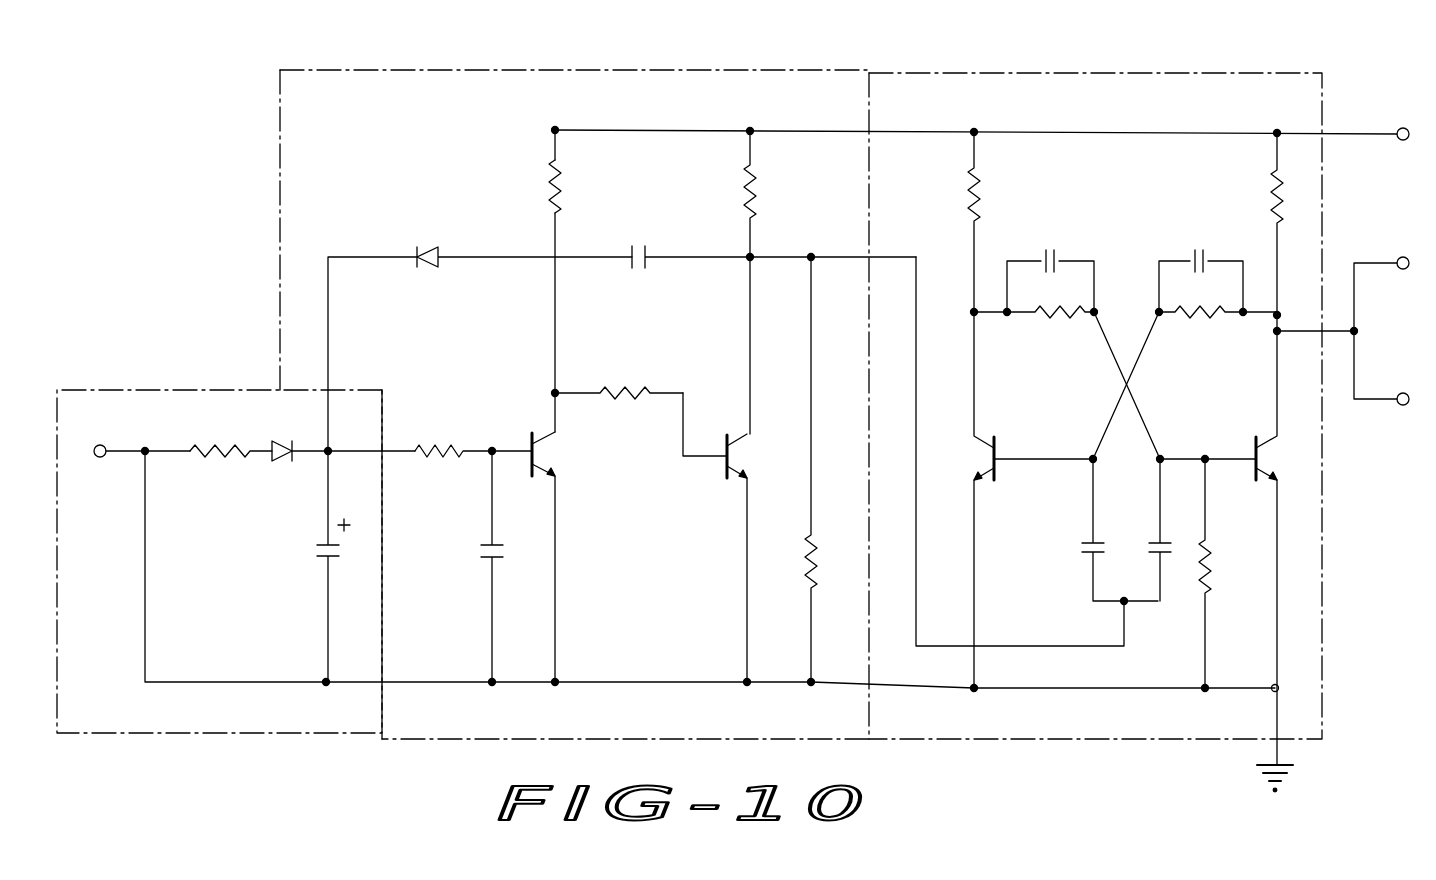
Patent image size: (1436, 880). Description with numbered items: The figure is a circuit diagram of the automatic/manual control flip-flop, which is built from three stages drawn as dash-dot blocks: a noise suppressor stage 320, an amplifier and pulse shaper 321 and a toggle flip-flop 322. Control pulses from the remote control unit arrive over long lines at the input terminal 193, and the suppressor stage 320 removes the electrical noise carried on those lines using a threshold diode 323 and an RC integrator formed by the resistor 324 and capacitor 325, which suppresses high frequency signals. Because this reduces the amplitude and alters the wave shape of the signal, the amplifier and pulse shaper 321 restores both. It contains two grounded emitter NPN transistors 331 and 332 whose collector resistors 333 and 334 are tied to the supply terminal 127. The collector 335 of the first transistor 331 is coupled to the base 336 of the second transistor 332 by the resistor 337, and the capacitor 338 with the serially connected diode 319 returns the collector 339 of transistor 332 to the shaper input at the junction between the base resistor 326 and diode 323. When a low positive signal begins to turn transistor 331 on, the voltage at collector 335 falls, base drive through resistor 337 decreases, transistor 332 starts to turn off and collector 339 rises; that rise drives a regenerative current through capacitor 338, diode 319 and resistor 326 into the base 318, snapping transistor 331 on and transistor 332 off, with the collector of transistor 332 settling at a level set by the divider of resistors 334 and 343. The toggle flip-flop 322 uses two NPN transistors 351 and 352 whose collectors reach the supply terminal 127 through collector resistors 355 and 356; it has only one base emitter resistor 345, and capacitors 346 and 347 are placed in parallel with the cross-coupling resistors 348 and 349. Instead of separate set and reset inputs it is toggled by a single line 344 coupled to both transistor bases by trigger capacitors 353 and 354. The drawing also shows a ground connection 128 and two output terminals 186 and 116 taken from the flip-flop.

The input terminal 193 is at (104, 444).
The resistor 324 is at (214, 444).
The threshold diode 323 is at (296, 444).
The capacitor 325 is at (314, 548).
The noise suppressor stage 320 is at (192, 390).
The amplifier and pulse shaper 321 is at (452, 70).
The toggle flip-flop 322 is at (1047, 73).
The base resistor 326 is at (446, 444).
The base 318 is at (510, 444).
The first transistor 331 is at (548, 452).
The collector 335 is at (542, 352).
The collector resistor 333 is at (542, 177).
The collector resistor 334 is at (738, 182).
The resistor 337 is at (638, 390).
The base 336 is at (684, 390).
The second transistor 332 is at (740, 453).
The collector 339 is at (750, 358).
The diode 319 is at (420, 250).
The capacitor 338 is at (626, 253).
The resistor 343 is at (801, 554).
The toggle line 344 is at (1013, 646).
The collector resistor 355 is at (966, 184).
The collector resistor 356 is at (1272, 184).
The NPN transistor 351 is at (976, 455).
The NPN transistor 352 is at (1263, 453).
The capacitor 346 is at (1056, 260).
The capacitor 347 is at (1204, 260).
The coupling resistor 348 is at (1040, 330).
The coupling resistor 349 is at (1185, 330).
The trigger capacitor 353 is at (1098, 560).
The trigger capacitor 354 is at (1152, 542).
The base emitter resistor 345 is at (1210, 570).
The supply terminal 127 is at (1398, 140).
The output terminal 186 is at (1390, 258).
The output terminal 116 is at (1390, 392).
The ground 128 is at (1288, 766).